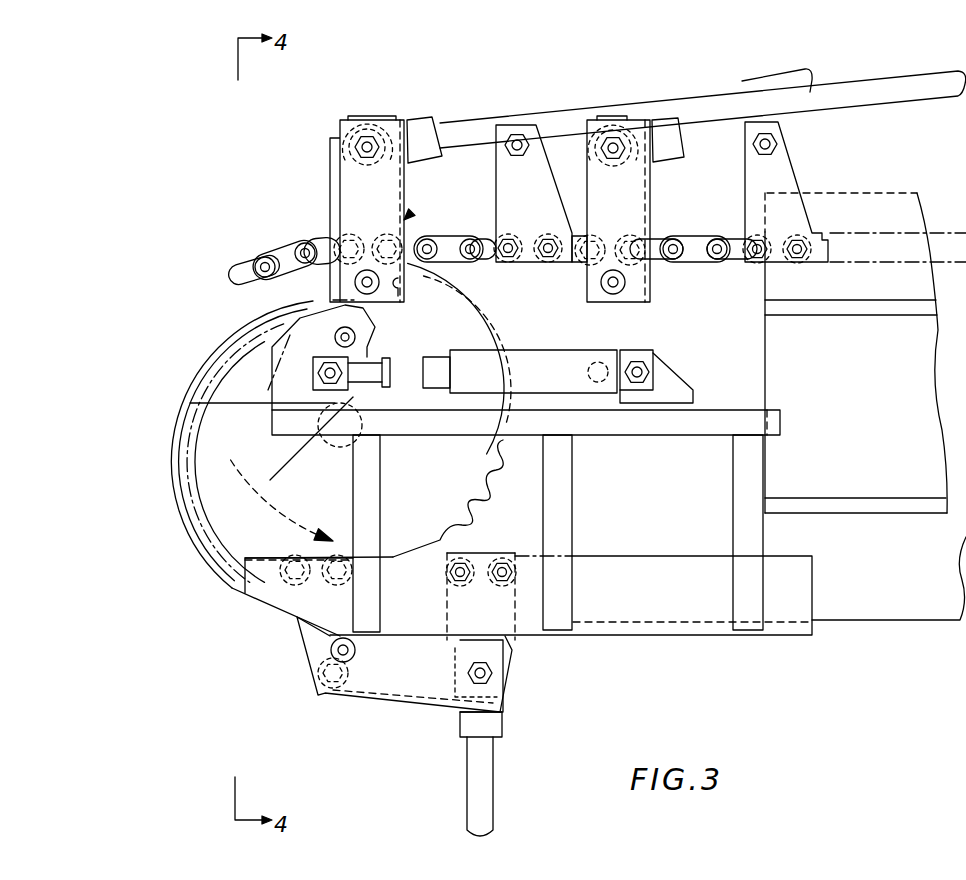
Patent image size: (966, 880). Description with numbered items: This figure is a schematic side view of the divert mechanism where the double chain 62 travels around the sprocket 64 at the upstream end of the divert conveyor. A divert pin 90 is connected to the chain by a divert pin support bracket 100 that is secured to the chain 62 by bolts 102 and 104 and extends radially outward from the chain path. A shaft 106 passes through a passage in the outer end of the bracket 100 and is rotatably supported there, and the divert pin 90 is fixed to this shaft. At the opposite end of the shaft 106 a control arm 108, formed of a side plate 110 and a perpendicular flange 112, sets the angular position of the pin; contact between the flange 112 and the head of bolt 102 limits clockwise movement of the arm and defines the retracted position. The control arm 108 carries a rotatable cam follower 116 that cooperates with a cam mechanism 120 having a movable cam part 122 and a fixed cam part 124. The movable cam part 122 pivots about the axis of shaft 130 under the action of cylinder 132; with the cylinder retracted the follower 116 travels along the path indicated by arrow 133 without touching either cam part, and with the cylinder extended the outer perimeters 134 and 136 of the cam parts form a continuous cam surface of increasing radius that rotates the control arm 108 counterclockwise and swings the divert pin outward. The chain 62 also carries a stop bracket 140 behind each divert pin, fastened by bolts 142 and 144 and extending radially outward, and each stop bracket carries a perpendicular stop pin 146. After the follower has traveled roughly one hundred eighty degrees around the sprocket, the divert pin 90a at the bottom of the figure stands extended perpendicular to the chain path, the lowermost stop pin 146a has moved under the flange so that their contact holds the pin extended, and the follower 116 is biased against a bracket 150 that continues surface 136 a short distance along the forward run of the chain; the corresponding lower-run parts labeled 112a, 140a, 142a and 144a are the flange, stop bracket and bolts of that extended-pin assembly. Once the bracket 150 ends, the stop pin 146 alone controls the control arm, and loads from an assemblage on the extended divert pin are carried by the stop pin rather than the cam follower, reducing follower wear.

The double chain 62 is at (450, 240).
The sprocket 64 is at (456, 540).
The divert pin 90 is at (768, 80).
The divert pin 90a is at (482, 777).
The divert pin support bracket 100 is at (332, 172).
The bolt 102 is at (380, 245).
The bolt 104 is at (342, 237).
The shaft 106 is at (363, 140).
The control arm 108 is at (413, 212).
The side plate 110 is at (385, 300).
The flange 112 is at (466, 290).
The lower bracket block 112a is at (397, 684).
The cam follower 116 is at (340, 282).
The cam mechanism 120 is at (225, 334).
The movable cam part 122 is at (210, 376).
The fixed cam part 124 is at (190, 502).
The shaft 130 is at (357, 337).
The cylinder 132 is at (593, 360).
The arrow 133 is at (292, 490).
The outer perimeter 134 is at (243, 327).
The outer perimeter 136 is at (183, 530).
The stop bracket 140 is at (510, 125).
The lower hanger bracket 140a is at (307, 660).
The bolt 142 is at (553, 263).
The lower bracket bolt 142a is at (315, 577).
The bolt 144 is at (520, 263).
The lower bracket bolt 144a is at (293, 577).
The stop pin 146 is at (517, 133).
The stop pin 146a is at (337, 693).
The bracket 150 is at (641, 638).